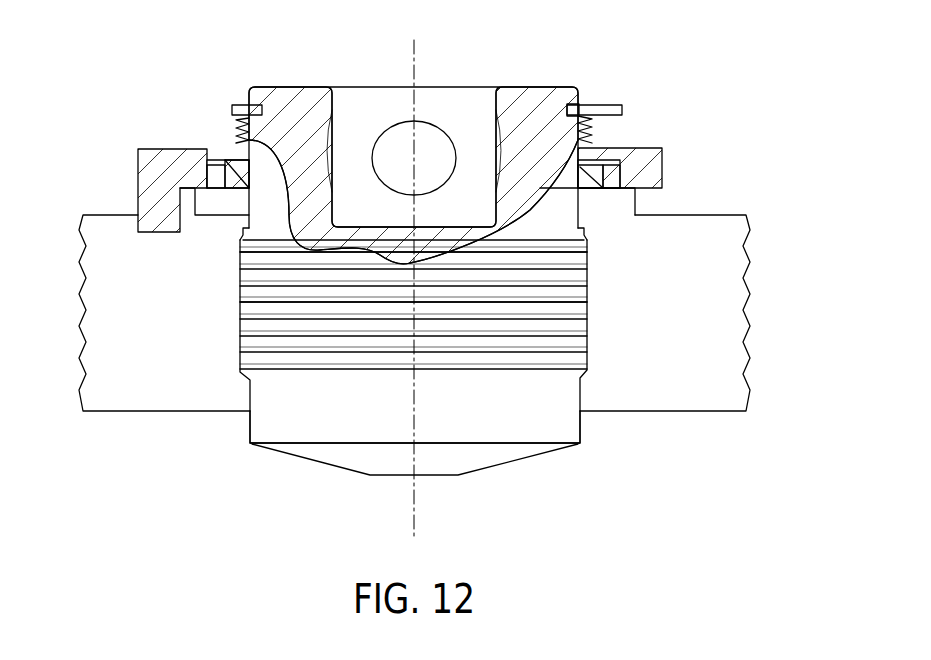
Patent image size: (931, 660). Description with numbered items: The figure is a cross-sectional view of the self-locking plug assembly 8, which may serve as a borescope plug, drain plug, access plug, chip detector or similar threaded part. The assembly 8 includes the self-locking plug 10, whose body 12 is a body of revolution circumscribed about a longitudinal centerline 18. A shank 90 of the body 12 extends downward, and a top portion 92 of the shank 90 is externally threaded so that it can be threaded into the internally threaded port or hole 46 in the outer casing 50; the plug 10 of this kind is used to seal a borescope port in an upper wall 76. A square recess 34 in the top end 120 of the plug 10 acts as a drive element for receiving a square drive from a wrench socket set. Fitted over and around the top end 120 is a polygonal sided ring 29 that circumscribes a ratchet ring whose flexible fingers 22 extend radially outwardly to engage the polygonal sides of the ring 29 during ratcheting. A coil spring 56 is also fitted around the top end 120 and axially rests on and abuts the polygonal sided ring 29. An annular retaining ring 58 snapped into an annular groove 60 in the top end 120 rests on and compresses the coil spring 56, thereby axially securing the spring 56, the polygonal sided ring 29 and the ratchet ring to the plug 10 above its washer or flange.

The self-locking plug assembly 8 is at (199, 489).
The self-locking plug 10 is at (582, 418).
The body 12 is at (510, 476).
The longitudinal centerline 18 is at (415, 56).
The flexible fingers 22 is at (233, 173).
The polygonal sided ring 29 is at (655, 148).
The square recess 34 is at (365, 87).
The internally threaded port or hole 46 is at (243, 300).
The outer casing 50 is at (101, 215).
The coil spring 56 is at (600, 133).
The annular retaining ring 58 is at (618, 105).
The annular groove 60 is at (582, 107).
The upper wall 76 is at (708, 215).
The shank 90 is at (590, 322).
The top portion of the shank 92 is at (590, 270).
The top end 120 is at (520, 87).